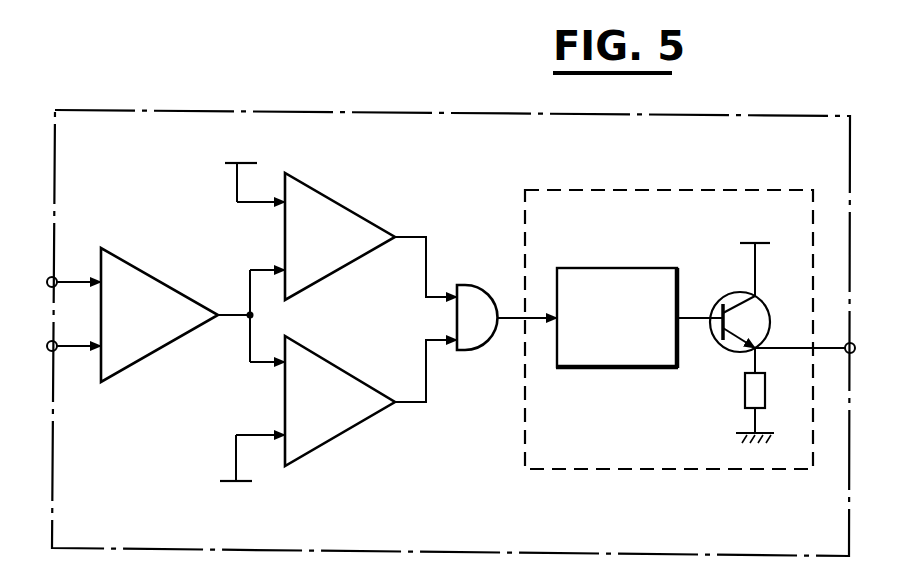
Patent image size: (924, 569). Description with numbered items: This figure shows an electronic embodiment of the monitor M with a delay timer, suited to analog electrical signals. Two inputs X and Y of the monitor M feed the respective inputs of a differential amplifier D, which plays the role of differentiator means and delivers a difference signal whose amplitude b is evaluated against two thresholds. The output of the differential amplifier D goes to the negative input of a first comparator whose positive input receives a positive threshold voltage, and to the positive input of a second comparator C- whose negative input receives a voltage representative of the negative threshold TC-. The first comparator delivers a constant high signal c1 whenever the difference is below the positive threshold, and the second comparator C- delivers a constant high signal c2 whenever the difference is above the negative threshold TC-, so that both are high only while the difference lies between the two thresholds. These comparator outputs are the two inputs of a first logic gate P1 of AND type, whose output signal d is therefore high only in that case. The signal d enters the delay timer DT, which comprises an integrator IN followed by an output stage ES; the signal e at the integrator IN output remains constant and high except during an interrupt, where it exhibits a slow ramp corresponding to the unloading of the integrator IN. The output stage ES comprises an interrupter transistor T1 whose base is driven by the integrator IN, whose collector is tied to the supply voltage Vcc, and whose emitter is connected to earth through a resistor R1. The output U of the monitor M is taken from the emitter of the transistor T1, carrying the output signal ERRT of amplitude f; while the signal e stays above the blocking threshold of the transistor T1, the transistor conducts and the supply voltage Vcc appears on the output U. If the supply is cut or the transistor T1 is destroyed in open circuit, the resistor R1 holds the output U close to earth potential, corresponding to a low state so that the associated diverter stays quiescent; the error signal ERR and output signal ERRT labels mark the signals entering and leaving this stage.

The monitor M is at (377, 135).
The input X is at (47, 280).
The input Y is at (47, 344).
The differential amplifier D is at (159, 315).
The amplitude of difference signal b is at (242, 313).
The negative threshold TC- is at (252, 474).
The second comparator C- is at (340, 401).
The output signal of first comparator c1 is at (411, 234).
The output signal of second comparator c2 is at (404, 404).
The first logic gate P1 is at (473, 338).
The output signal of first logic gate d is at (508, 314).
The delay timer DT is at (601, 190).
The error signal ERR is at (554, 312).
The integrator IN is at (617, 318).
The output signal of integrator e is at (706, 316).
The interrupter transistor T1 is at (752, 310).
The supply voltage Vcc is at (755, 259).
The amplitude of output signal f is at (799, 346).
The resistor R1 is at (766, 393).
The output stage ES is at (708, 360).
The error output signal ERRT is at (842, 343).
The output U is at (854, 354).